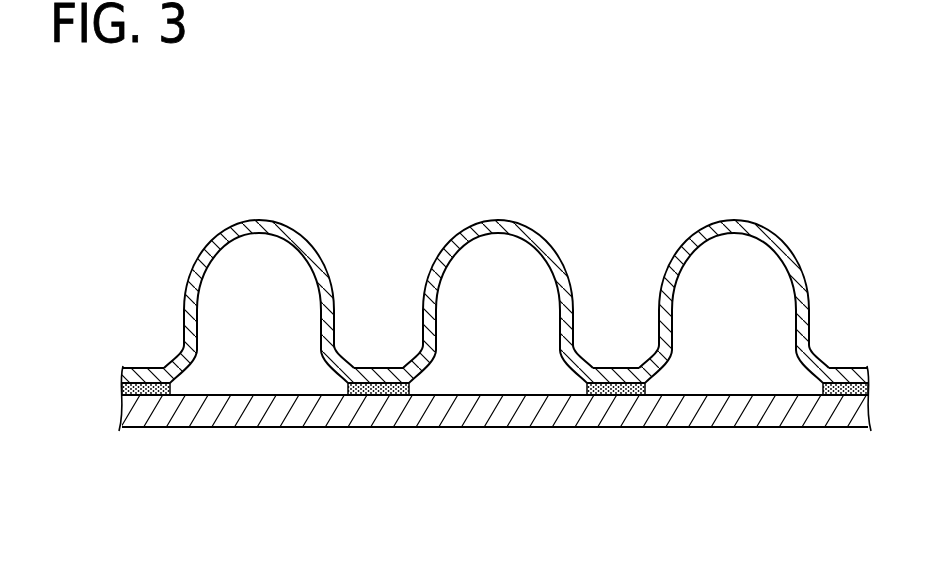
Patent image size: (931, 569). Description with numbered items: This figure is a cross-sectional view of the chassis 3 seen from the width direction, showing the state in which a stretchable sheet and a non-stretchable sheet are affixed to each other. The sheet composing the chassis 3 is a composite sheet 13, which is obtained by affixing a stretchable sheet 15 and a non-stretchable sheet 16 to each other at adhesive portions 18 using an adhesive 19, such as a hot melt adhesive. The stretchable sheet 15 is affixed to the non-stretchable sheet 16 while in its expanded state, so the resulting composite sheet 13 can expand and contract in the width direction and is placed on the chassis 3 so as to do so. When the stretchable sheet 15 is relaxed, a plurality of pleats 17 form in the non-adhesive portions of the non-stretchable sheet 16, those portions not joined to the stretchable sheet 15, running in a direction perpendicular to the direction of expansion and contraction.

The chassis 3 is at (648, 104).
The composite sheet 13 is at (746, 172).
The stretchable sheet 15 is at (158, 420).
The non-stretchable sheet 16 is at (505, 219).
The pleats 17 is at (266, 220).
The adhesive portions 18 is at (388, 396).
The adhesive 19 is at (384, 383).